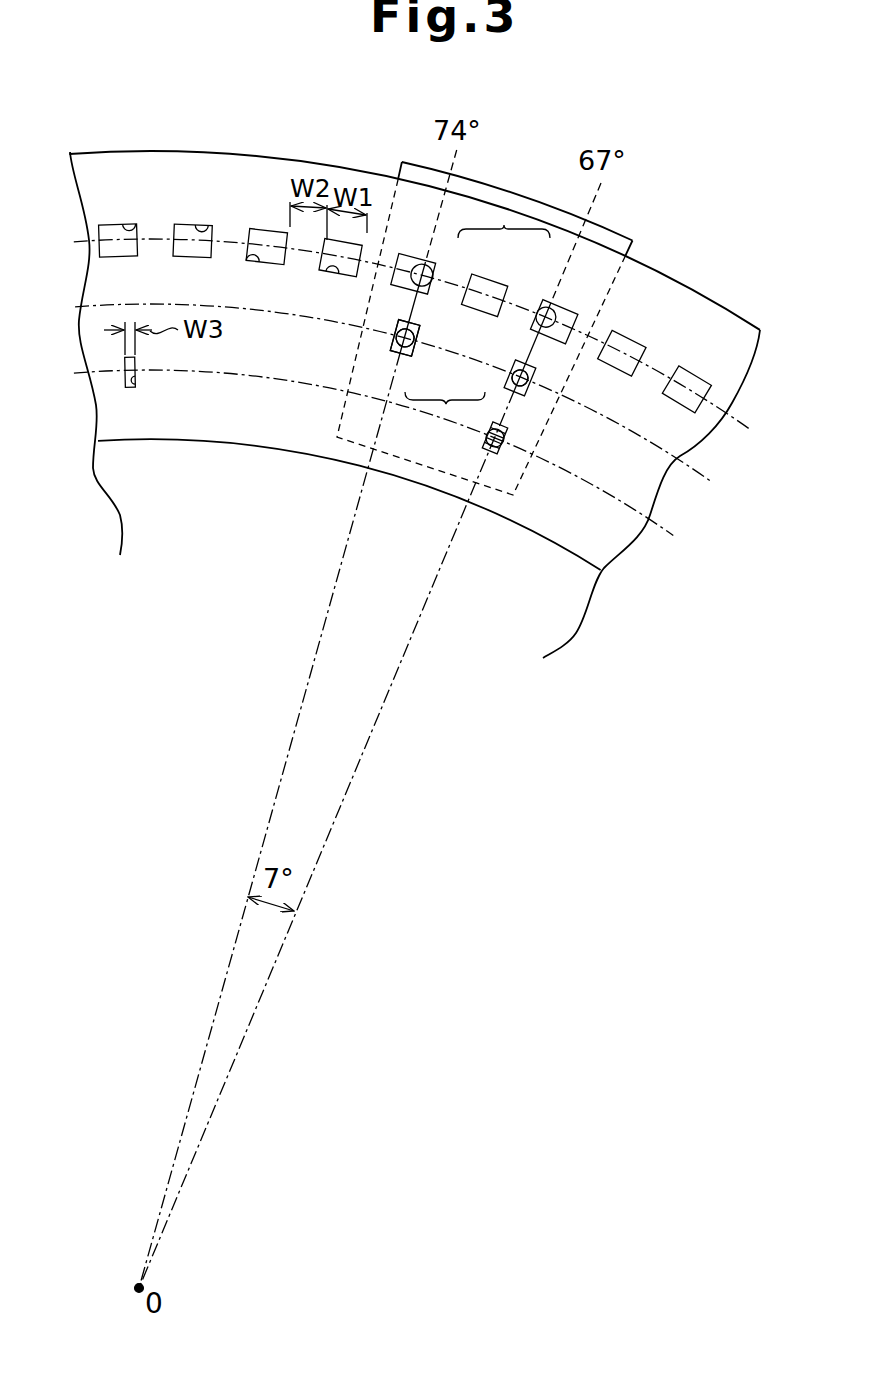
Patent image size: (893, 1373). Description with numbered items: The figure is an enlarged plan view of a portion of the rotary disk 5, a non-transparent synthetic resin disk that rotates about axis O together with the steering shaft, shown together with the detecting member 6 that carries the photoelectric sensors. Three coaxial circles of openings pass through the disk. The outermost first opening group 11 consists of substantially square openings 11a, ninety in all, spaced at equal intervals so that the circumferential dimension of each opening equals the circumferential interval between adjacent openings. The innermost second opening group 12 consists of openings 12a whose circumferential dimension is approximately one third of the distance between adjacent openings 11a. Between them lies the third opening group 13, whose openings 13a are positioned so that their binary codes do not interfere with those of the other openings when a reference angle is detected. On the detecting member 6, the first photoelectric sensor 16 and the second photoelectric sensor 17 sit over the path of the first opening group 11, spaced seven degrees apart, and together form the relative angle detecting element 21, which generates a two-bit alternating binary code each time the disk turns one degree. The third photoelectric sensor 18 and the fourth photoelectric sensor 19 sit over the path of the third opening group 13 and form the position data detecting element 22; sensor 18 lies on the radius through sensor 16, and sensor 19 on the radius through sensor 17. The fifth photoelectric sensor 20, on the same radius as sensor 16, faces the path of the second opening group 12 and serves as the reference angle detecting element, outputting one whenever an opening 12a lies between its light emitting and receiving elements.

The rotary disk 5 is at (714, 310).
The detecting member 6 is at (612, 236).
The first opening group 11 is at (118, 222).
The opening 11a is at (188, 225).
The second opening group 12 is at (133, 394).
The opening 12a is at (136, 384).
The third opening group 13 is at (394, 343).
The opening 13a is at (417, 334).
The first photoelectric sensor 16 is at (543, 304).
The second photoelectric sensor 17 is at (430, 266).
The third photoelectric sensor 18 is at (508, 377).
The fourth photoelectric sensor 19 is at (416, 358).
The fifth photoelectric sensor 20 is at (504, 434).
The relative angle detecting element 21 is at (504, 226).
The position data detecting element 22 is at (446, 404).